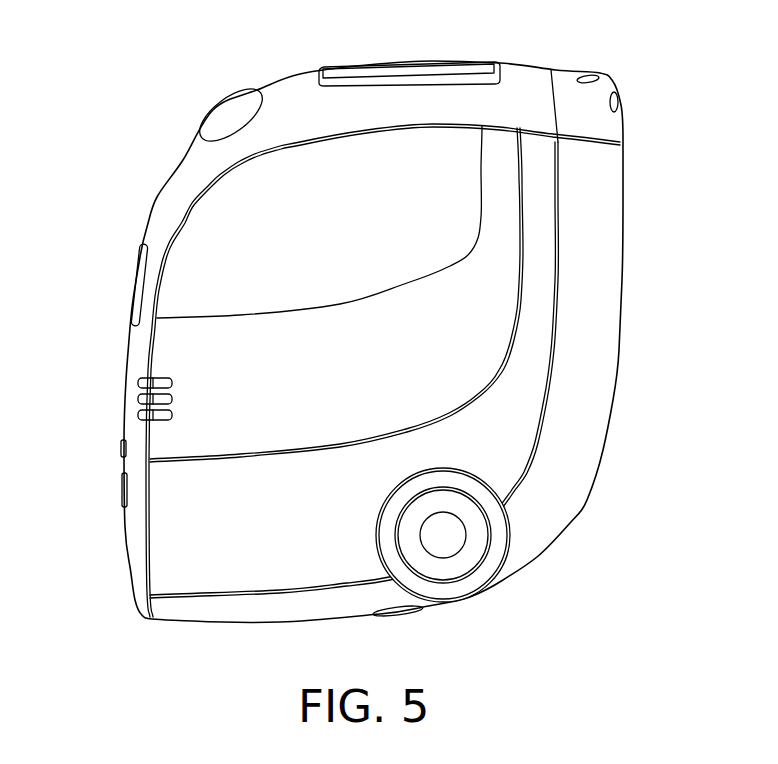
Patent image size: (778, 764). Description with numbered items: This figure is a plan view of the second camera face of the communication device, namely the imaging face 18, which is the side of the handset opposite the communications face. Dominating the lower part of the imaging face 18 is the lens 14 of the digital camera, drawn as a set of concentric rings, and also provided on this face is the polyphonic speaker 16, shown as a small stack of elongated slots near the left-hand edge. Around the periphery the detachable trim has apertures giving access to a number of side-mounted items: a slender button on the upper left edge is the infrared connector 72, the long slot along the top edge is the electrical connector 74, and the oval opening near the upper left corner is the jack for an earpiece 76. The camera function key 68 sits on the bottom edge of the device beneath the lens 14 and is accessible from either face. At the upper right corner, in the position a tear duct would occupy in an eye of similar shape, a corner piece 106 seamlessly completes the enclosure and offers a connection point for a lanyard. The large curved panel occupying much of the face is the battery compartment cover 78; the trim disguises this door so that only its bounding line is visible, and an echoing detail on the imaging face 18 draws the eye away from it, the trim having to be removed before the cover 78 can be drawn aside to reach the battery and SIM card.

The lens 14 is at (443, 538).
The polyphonic speaker 16 is at (138, 413).
The imaging face 18 is at (218, 230).
The camera function key 68 is at (398, 617).
The infrared connector 72 is at (131, 280).
The electrical connector 74 is at (422, 62).
The jack for an earpiece 76 is at (223, 113).
The battery compartment cover 78 is at (210, 347).
The corner piece 106 is at (598, 98).